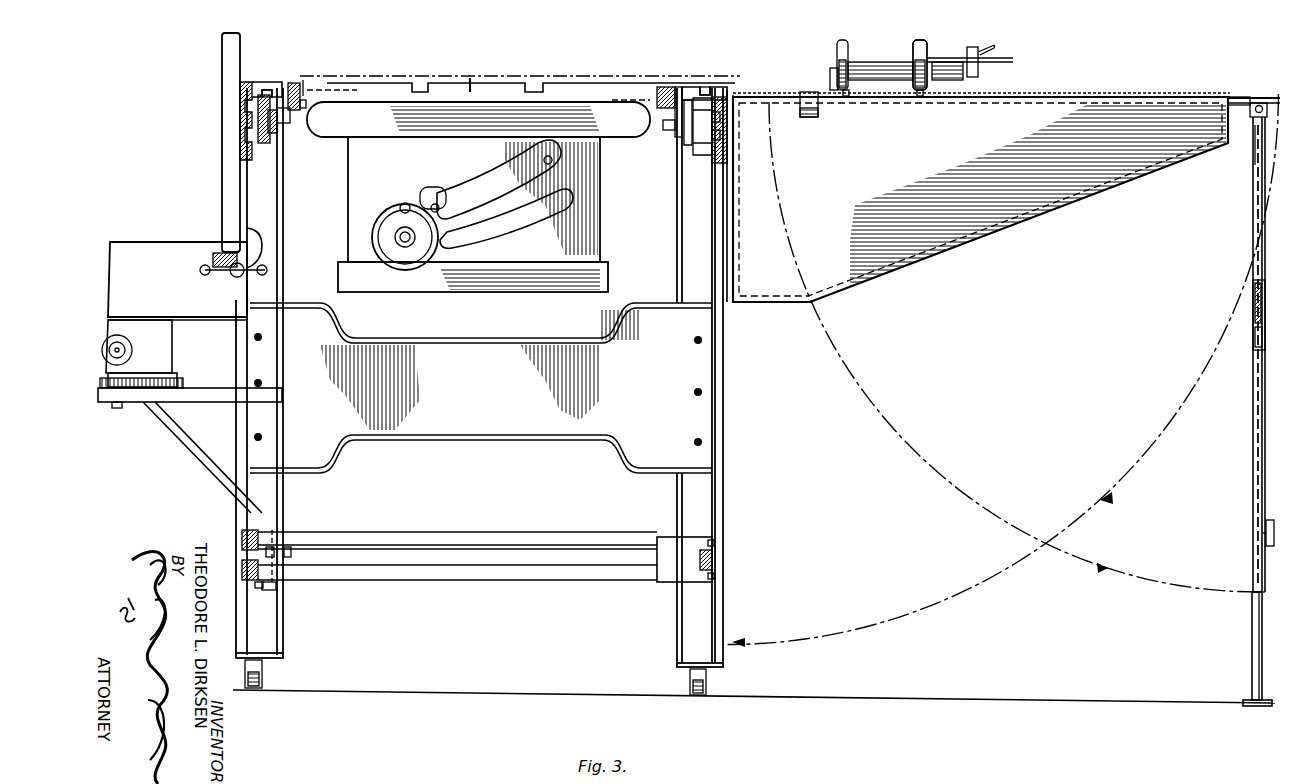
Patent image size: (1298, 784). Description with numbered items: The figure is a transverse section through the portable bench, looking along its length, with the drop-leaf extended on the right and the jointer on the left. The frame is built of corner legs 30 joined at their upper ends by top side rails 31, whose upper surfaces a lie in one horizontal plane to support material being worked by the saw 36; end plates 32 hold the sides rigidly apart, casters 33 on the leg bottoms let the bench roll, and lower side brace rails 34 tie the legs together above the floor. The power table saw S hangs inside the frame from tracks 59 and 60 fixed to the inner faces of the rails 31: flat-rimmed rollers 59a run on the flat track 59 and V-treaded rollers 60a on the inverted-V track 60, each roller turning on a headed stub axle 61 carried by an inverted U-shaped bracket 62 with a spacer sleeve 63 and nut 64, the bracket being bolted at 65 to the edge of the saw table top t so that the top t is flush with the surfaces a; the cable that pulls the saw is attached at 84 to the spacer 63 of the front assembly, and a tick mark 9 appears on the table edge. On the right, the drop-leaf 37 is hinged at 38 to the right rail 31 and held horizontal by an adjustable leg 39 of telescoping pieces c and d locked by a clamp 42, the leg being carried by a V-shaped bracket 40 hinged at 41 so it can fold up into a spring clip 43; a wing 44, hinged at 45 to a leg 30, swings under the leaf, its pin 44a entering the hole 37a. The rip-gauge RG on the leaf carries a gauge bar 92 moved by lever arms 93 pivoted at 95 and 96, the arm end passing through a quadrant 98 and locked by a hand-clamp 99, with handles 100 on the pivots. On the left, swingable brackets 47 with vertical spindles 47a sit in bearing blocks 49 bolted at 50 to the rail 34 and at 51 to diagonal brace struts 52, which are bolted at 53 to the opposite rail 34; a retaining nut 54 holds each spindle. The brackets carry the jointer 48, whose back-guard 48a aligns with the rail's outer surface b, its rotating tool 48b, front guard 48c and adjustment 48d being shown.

The saw table 9 is at (418, 83).
The corner standard or leg 30 is at (283, 207).
The top side rail 31 is at (272, 85).
The end plate 32 is at (455, 438).
The caster 33 is at (264, 676).
The lower side brace rail 34 is at (255, 586).
The saw 36 is at (470, 78).
The drop-leaf 37 is at (1053, 93).
The opening or hole 37a is at (1214, 95).
The hinge 38 is at (732, 100).
The adjustable leg 39 is at (1243, 423).
The V-shaped bracket 40 is at (1253, 155).
The pivot 41 is at (1256, 114).
The set screw or clamp 42 is at (1266, 540).
The spring clip 43 is at (810, 118).
The wing 44 is at (995, 226).
The pin 44a is at (1245, 96).
The hinge 45 is at (770, 112).
The horizontally swingable bracket 47 is at (210, 396).
The vertical spindle 47a is at (283, 420).
The jointer 48 is at (174, 314).
The back-guard 48a is at (262, 235).
The rotating tool 48b is at (218, 254).
The front guard 48c is at (140, 250).
The adjustment 48d is at (235, 275).
The bearing block 49 is at (300, 578).
The bolt 50 is at (242, 545).
The bolt 51 is at (292, 552).
The diagonal brace strut 52 is at (525, 578).
The bolt 53 is at (714, 543).
The retaining pin or nut 54 is at (278, 584).
The track 59 is at (240, 152).
The roller 59a is at (246, 112).
The track 60 is at (300, 124).
The roller 60a is at (727, 135).
The headed stub axle 61 is at (663, 125).
The inverted U-shaped bracket 62 is at (303, 94).
The spacer sleeve 63 is at (270, 140).
The nut 64 is at (307, 110).
The bolt 65 is at (648, 108).
The cable end connection 84 is at (727, 118).
The gauge bar 92 is at (832, 72).
The lever arm 93 is at (905, 66).
The pivot 95 is at (920, 98).
The pivot 96 is at (845, 98).
The quadrant 98 is at (990, 62).
The threaded hand-clamp 99 is at (967, 52).
The handle 100 is at (912, 47).
The rip-gauge RG is at (831, 67).
The power table saw S is at (473, 214).
The upper surface of rail a is at (250, 85).
The outer surface of rail b is at (240, 90).
The telescoping piece c is at (1252, 615).
The telescoping piece d is at (1251, 455).
The table top t is at (308, 85).